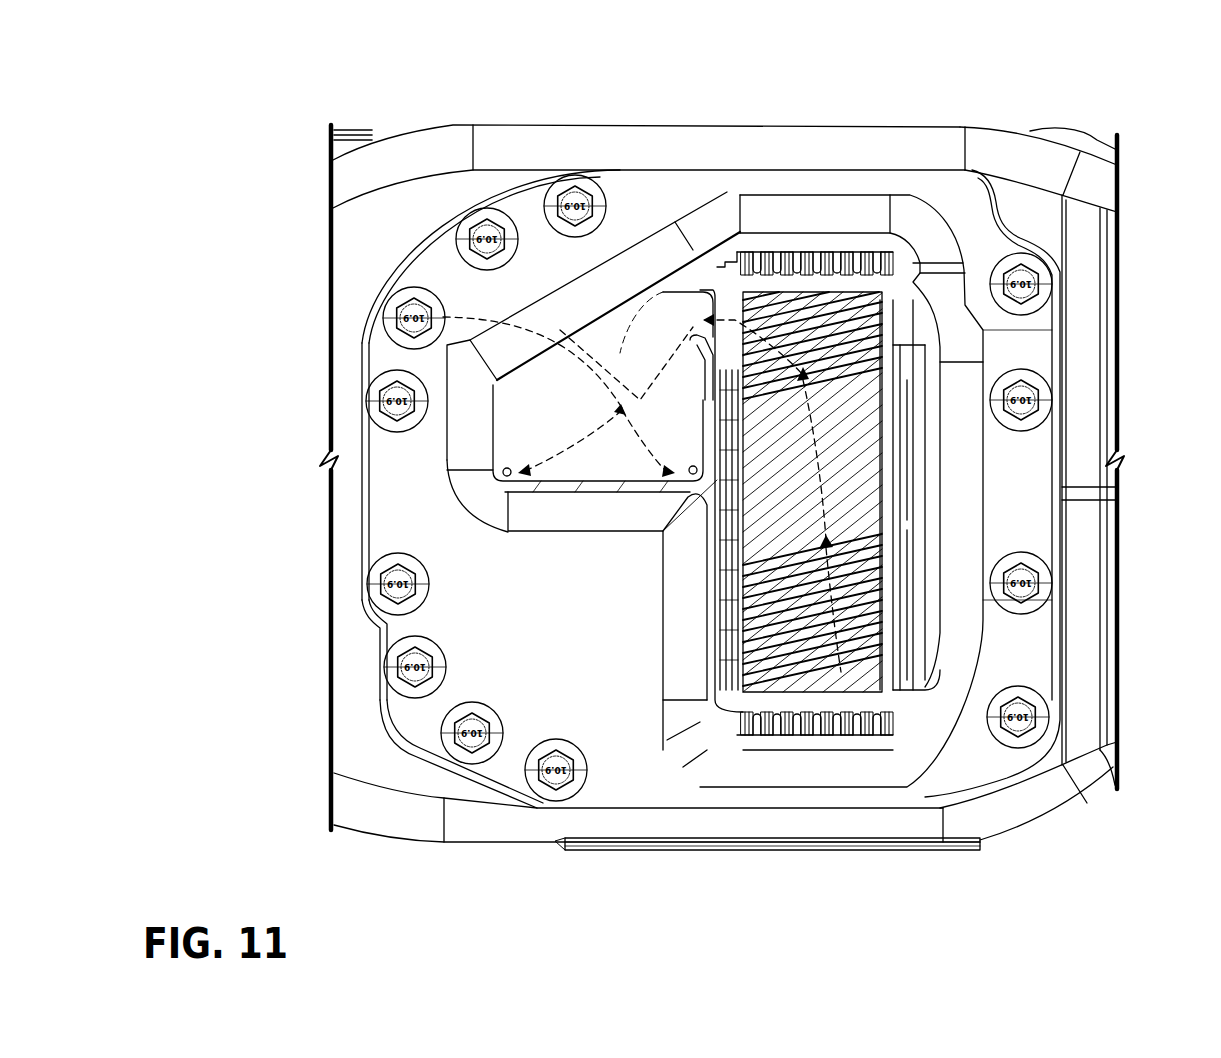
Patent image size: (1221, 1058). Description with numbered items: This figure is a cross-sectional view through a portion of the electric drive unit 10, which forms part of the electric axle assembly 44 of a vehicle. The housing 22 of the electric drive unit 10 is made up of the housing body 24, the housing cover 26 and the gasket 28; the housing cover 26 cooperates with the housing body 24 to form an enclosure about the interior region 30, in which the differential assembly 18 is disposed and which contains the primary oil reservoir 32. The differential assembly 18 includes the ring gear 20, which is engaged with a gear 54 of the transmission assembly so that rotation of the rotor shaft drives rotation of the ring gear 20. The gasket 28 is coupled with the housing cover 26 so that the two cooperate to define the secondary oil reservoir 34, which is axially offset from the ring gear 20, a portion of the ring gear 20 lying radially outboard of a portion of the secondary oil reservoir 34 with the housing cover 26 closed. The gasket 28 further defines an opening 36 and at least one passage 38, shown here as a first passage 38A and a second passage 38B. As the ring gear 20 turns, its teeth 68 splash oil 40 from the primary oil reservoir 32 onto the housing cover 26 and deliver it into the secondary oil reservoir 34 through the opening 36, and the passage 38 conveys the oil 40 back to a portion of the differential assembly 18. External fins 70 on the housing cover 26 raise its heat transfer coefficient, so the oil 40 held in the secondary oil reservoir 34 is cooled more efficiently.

The electric drive unit 10 is at (566, 106).
The differential assembly 18 is at (863, 338).
The ring gear 20 is at (784, 328).
The housing 22 is at (1012, 158).
The housing body 24 is at (1053, 168).
The housing cover 26 is at (600, 350).
The gasket 28 is at (618, 356).
The interior region 30 is at (924, 512).
The primary oil reservoir 32 is at (924, 611).
The secondary oil reservoir 34 is at (556, 416).
The opening 36 is at (693, 310).
The passage 38 is at (432, 592).
The first passage 38A is at (693, 476).
The second passage 38B is at (506, 475).
The oil 40 is at (363, 297).
The electric axle assembly 44 is at (370, 90).
The gear 54 is at (812, 370).
The teeth 68 is at (838, 340).
The external fins 70 is at (802, 715).